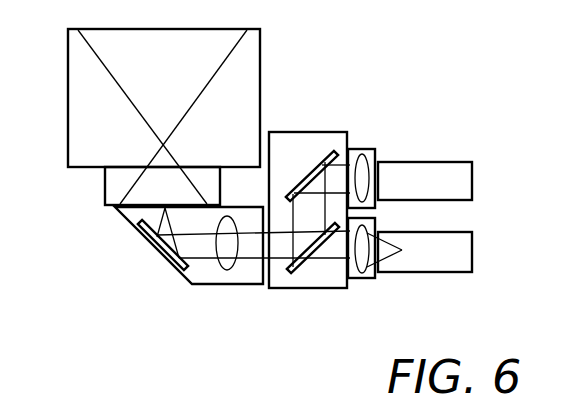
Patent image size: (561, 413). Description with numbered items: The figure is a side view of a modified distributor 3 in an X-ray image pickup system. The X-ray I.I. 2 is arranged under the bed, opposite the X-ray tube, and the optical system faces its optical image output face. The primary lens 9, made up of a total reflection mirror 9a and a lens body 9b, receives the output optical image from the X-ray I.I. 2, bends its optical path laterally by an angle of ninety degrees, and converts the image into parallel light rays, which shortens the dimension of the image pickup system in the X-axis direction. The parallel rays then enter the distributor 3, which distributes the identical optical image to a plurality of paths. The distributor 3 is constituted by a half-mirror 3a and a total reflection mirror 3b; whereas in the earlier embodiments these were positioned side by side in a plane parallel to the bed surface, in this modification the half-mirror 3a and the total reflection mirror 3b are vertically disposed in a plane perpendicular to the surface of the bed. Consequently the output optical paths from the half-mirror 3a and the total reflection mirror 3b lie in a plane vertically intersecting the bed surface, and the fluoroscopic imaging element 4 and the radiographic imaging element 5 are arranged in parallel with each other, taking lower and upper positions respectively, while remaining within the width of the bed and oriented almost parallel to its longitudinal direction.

The X-ray I.I. 2 is at (68, 134).
The distributor 3 is at (322, 198).
The half-mirror 3a is at (303, 269).
The total reflection mirror 3b is at (334, 150).
The fluoroscopic imaging element 4 is at (440, 272).
The radiographic imaging element 5 is at (419, 162).
The primary lens 9 is at (211, 263).
The total reflection mirror 9a is at (142, 236).
The lens body 9b is at (232, 272).